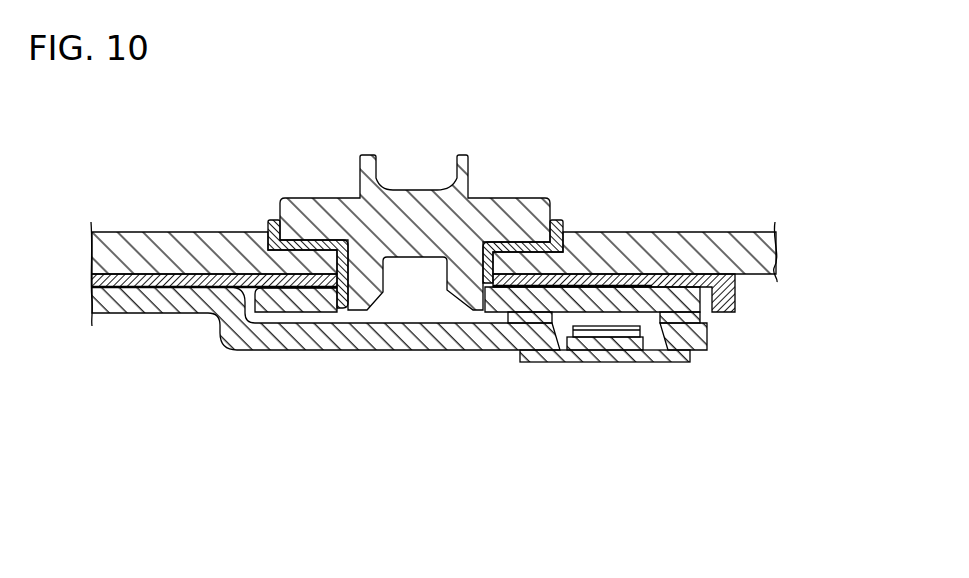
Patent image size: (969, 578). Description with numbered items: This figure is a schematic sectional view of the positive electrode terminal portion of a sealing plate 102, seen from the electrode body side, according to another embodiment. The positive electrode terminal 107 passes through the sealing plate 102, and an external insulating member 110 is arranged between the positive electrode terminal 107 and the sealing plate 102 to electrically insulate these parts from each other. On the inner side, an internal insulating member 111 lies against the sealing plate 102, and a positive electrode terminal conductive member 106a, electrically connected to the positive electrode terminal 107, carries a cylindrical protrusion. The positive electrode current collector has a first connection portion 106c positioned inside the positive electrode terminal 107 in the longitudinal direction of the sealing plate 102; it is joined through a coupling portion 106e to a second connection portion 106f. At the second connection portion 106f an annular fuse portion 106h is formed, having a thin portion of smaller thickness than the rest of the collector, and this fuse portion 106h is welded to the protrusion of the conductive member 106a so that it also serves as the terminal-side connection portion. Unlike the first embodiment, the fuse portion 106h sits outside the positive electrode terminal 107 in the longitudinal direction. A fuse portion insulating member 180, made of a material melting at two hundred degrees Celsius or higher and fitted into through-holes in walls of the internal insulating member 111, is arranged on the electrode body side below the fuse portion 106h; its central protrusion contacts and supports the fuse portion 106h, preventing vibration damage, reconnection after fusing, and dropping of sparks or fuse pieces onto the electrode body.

The sealing plate 102 is at (738, 232).
The positive electrode terminal conductive member 106a is at (679, 273).
The first connection portion 106c is at (123, 304).
The coupling portion 106e is at (222, 347).
The second connection portion 106f is at (463, 349).
The fuse portion 106h is at (560, 362).
The positive electrode terminal 107 is at (500, 197).
The external insulating member 110 is at (560, 224).
The internal insulating member 111 is at (631, 272).
The fuse portion insulating member 180 is at (673, 362).